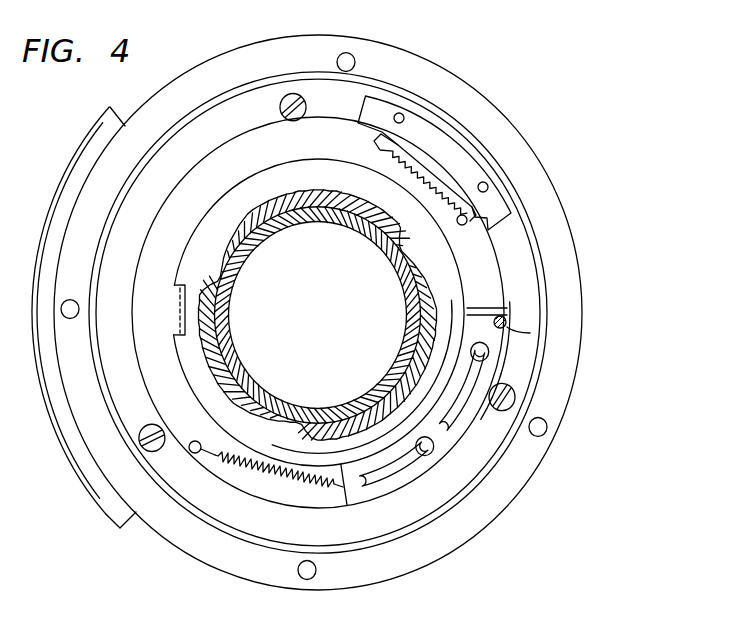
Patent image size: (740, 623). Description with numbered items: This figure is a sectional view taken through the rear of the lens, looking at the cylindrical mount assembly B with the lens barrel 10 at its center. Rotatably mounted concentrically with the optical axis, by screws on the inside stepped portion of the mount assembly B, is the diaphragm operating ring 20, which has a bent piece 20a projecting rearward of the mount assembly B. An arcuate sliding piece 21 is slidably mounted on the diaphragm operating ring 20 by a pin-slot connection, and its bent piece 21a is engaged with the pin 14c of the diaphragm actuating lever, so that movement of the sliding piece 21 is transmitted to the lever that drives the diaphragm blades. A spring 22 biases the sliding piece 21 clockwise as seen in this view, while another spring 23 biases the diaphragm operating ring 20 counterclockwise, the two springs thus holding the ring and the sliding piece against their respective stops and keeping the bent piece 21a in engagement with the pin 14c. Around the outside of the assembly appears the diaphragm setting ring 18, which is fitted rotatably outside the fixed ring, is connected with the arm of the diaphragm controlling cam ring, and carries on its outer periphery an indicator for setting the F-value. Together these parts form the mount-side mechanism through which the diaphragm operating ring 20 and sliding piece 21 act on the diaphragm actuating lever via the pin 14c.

The mount assembly B is at (507, 119).
The lens barrel 10 is at (251, 215).
The pin 14c is at (500, 322).
The diaphragm setting ring 18 is at (113, 511).
The diaphragm operating ring 20 is at (500, 262).
The bent piece 20a is at (183, 312).
The arcuate sliding piece 21 is at (463, 427).
The bent piece 21a is at (494, 308).
The spring 22 is at (248, 468).
The spring 23 is at (423, 175).